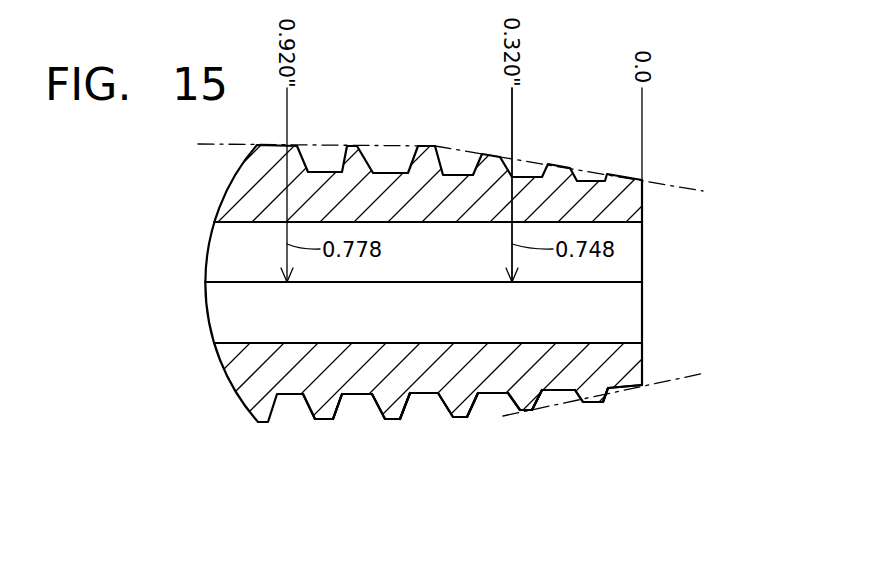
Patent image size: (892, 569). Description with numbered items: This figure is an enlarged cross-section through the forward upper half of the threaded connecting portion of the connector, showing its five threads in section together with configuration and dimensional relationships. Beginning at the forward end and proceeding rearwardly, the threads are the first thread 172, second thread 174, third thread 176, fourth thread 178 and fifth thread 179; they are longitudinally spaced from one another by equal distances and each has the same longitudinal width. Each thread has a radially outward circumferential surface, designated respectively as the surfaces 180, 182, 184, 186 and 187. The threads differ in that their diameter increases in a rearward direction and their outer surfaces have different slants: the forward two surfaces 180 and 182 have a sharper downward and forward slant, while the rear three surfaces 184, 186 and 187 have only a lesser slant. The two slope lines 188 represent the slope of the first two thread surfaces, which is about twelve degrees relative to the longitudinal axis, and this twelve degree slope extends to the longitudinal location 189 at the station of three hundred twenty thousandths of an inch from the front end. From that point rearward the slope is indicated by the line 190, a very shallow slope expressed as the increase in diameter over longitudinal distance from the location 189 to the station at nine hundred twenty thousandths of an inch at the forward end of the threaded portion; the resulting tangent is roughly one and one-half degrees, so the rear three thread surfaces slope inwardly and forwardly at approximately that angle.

The first thread 172 is at (588, 392).
The second thread 174 is at (536, 384).
The third thread 176 is at (465, 393).
The fourth thread 178 is at (408, 392).
The fifth thread 179 is at (335, 393).
The radially outward circumferential surface of first thread 180 is at (588, 391).
The radially outward circumferential surface of second thread 182 is at (528, 410).
The radially outward circumferential surface of third thread 184 is at (474, 419).
The radially outward circumferential surface of fourth thread 186 is at (400, 420).
The radially outward circumferential surface of fifth thread 187 is at (331, 419).
The slope lines 188 is at (678, 185).
The longitudinal location at 0.320 inch station 189 is at (512, 124).
The shallow slope line 190 is at (323, 146).